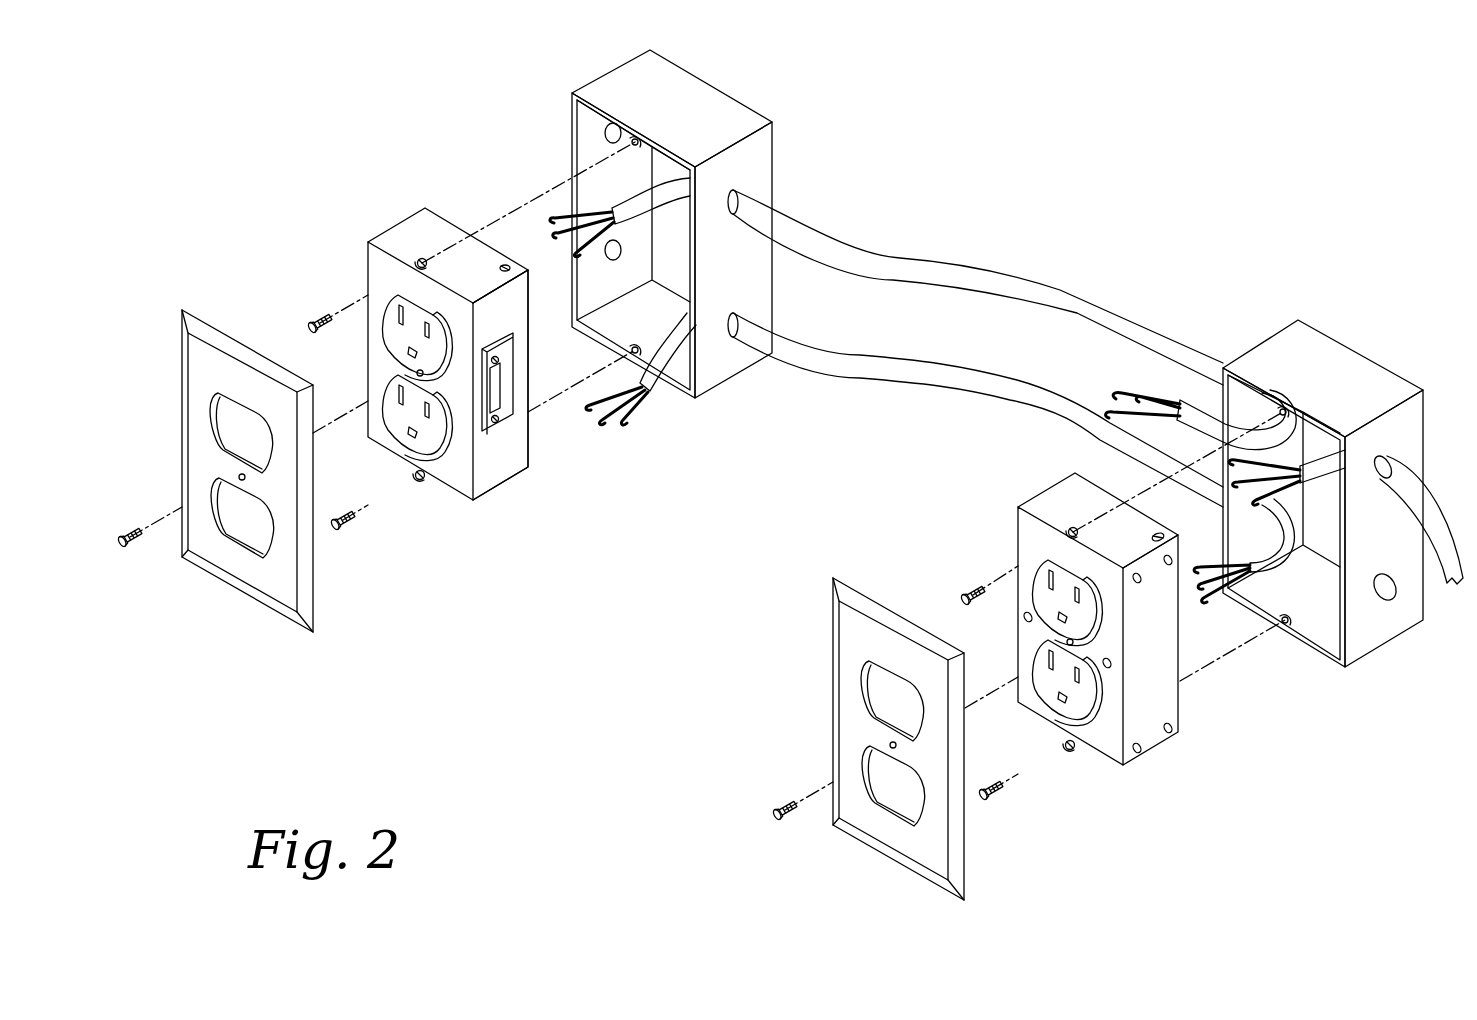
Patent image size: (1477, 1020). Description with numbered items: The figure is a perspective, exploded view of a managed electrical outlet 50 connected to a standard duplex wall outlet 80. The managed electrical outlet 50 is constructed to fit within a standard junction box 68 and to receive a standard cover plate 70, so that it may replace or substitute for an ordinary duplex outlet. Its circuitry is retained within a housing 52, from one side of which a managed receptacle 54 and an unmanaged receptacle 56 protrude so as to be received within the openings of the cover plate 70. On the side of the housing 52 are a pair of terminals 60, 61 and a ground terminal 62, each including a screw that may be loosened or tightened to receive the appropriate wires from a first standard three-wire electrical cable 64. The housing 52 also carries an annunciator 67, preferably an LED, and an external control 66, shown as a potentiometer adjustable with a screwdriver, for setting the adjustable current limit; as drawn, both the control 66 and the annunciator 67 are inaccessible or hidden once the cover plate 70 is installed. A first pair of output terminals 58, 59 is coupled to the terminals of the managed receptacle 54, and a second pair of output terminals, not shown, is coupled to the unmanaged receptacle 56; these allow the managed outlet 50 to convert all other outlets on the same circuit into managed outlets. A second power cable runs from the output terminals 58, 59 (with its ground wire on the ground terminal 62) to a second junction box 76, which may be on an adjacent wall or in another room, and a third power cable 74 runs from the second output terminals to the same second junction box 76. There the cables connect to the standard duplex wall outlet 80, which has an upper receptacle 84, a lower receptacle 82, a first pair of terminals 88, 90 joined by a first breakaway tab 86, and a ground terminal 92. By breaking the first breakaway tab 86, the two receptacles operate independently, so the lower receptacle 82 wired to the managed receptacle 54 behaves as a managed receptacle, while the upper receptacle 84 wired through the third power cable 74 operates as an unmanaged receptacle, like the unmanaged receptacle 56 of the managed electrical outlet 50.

The managed electrical outlet 50 is at (1099, 669).
The housing 52 is at (1099, 653).
The managed receptacle 54 is at (1068, 740).
The unmanaged receptacle 56 is at (1025, 560).
The first output terminal 58 is at (1154, 782).
The first output terminal 59 is at (1204, 722).
The terminal 60 is at (1179, 609).
The terminal 61 is at (1191, 536).
The ground terminal 62 is at (1132, 503).
The first standard three-wire electrical cable 64 is at (1318, 487).
The external control 66 is at (1173, 678).
The annunciator 67 is at (999, 622).
The junction box 68 is at (1284, 518).
The cover plate 70 is at (863, 850).
The third power cable 74 is at (1078, 293).
The second junction box 76 is at (753, 110).
The standard duplex wall outlet 80 is at (439, 363).
The lower receptacle 82 is at (400, 357).
The upper receptacle 84 is at (388, 303).
The first breakaway tab 86 is at (490, 387).
The first terminal 88 is at (503, 443).
The first terminal 90 is at (488, 419).
The ground terminal 92 is at (503, 263).